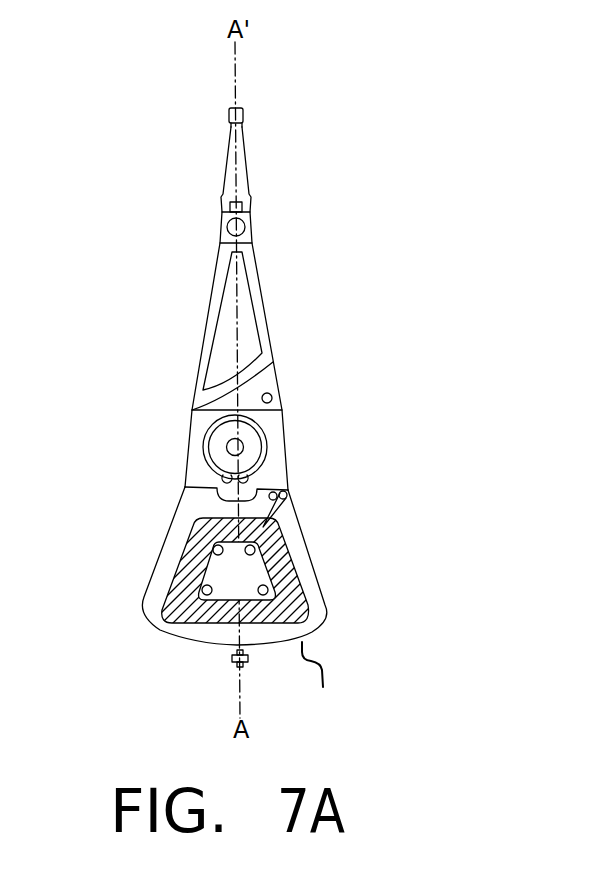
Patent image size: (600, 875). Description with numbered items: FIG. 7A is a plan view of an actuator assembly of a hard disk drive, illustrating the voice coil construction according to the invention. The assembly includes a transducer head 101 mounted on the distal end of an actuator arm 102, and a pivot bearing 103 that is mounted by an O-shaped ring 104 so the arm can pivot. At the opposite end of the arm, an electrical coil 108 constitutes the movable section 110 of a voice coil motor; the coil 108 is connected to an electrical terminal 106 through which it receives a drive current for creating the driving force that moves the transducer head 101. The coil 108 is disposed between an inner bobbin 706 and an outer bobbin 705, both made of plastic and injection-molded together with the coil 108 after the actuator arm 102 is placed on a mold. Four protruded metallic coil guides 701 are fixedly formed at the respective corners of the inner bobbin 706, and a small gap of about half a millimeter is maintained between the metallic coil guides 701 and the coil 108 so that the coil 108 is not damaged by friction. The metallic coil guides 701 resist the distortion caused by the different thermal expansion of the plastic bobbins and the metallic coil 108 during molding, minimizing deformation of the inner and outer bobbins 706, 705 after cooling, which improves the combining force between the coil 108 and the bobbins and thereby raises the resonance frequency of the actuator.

The transducer head 101 is at (243, 113).
The actuator arm 102 is at (263, 303).
The pivot bearing 103 is at (218, 447).
The O-shaped ring 104 is at (264, 443).
The electrical terminal 106 is at (288, 493).
The metallic coil guide 701 is at (280, 535).
The outer bobbin 705 is at (173, 545).
The inner bobbin 706 is at (204, 577).
The electrical coil 108 is at (288, 619).
The movable section 110 is at (319, 679).